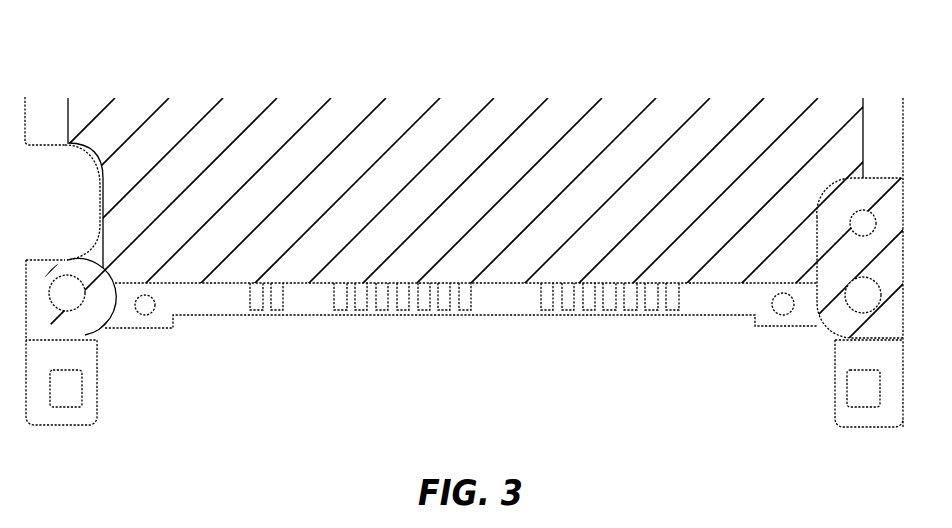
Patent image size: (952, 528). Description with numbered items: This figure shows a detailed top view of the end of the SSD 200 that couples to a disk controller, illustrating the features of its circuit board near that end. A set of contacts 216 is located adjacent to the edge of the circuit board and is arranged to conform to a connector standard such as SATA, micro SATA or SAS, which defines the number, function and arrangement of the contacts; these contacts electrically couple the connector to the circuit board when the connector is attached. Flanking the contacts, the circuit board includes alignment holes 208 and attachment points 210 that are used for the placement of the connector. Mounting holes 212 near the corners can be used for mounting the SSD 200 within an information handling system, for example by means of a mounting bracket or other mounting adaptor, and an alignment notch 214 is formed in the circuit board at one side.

The SSD 200 is at (778, 66).
The alignment holes 208 is at (145, 305).
The attachment points 210 is at (65, 387).
The mounting holes 212 is at (67, 297).
The alignment notch 214 is at (48, 178).
The set of contacts 216 is at (284, 334).